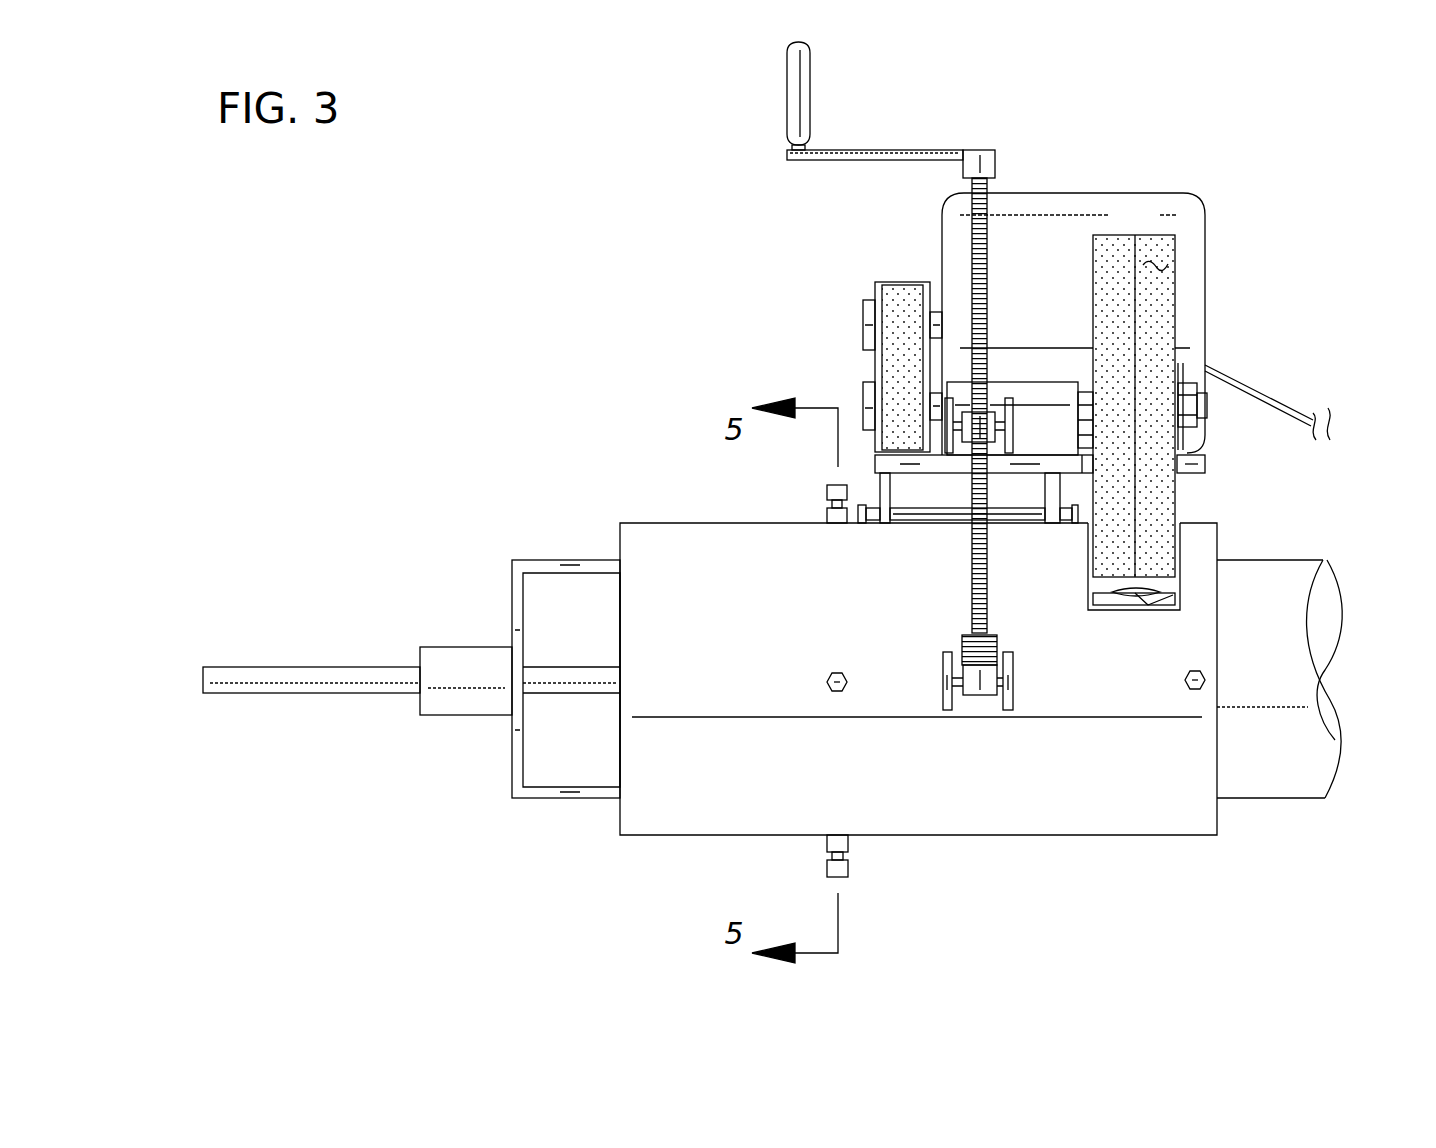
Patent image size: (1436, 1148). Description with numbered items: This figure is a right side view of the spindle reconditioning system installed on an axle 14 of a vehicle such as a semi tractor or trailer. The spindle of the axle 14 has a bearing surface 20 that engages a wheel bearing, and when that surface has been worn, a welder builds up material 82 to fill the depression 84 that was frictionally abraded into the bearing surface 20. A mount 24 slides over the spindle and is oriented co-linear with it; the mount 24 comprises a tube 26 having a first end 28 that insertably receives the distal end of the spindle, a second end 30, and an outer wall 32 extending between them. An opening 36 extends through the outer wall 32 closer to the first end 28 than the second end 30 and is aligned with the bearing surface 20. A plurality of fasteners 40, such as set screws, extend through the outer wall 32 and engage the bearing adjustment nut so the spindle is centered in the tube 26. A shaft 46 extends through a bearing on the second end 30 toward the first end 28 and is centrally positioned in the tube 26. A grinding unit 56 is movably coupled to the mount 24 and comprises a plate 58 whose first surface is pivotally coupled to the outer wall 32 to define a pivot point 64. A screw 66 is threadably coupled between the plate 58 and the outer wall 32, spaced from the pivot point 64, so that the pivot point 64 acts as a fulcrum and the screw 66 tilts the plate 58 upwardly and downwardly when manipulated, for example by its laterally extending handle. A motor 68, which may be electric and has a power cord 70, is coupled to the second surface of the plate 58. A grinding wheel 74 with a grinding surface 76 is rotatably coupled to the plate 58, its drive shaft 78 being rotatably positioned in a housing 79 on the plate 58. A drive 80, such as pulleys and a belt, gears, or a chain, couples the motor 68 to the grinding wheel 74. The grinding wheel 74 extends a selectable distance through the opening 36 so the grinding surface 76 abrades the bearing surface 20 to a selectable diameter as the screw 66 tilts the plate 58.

The axle 14 is at (1298, 560).
The bearing surface 20 is at (1157, 598).
The mount 24 is at (1058, 885).
The tube 26 is at (995, 838).
The first end 28 is at (1217, 818).
The second end 30 is at (620, 802).
The outer wall 32 is at (735, 800).
The opening 36 is at (1180, 547).
The fasteners 40 is at (830, 674).
The shaft 46 is at (342, 665).
The grinding unit 56 is at (1125, 122).
The plate 58 is at (878, 458).
The pivot point 64 is at (880, 490).
The screw 66 is at (972, 248).
The motor 68 is at (1180, 193).
The power cord 70 is at (1292, 393).
The grinding wheel 74 is at (1175, 290).
The grinding surface 76 is at (1155, 262).
The drive shaft 78 is at (1092, 390).
The housing 79 is at (1025, 382).
The drive 80 is at (887, 292).
The material 82 is at (1120, 605).
The depression 84 is at (1118, 605).